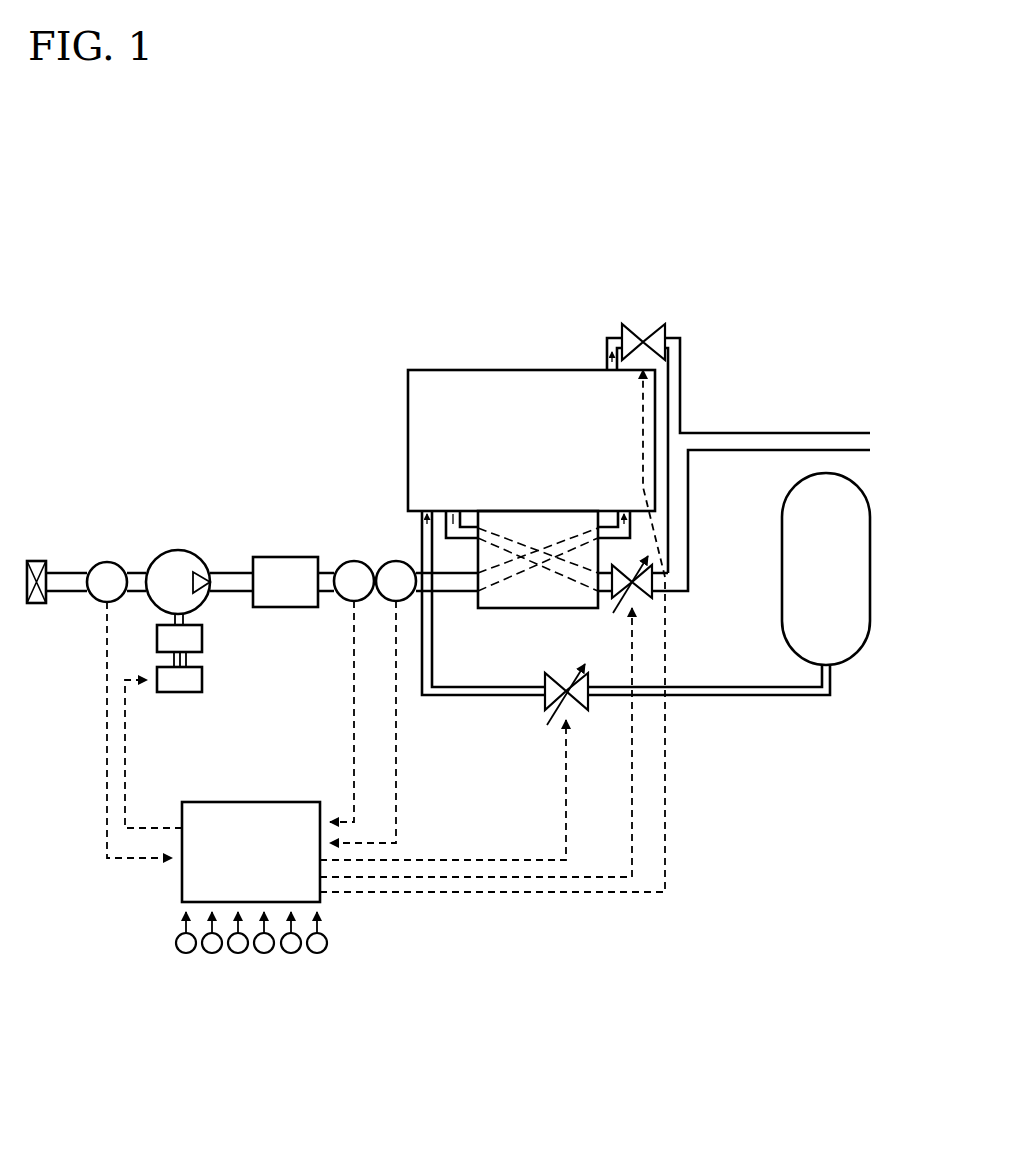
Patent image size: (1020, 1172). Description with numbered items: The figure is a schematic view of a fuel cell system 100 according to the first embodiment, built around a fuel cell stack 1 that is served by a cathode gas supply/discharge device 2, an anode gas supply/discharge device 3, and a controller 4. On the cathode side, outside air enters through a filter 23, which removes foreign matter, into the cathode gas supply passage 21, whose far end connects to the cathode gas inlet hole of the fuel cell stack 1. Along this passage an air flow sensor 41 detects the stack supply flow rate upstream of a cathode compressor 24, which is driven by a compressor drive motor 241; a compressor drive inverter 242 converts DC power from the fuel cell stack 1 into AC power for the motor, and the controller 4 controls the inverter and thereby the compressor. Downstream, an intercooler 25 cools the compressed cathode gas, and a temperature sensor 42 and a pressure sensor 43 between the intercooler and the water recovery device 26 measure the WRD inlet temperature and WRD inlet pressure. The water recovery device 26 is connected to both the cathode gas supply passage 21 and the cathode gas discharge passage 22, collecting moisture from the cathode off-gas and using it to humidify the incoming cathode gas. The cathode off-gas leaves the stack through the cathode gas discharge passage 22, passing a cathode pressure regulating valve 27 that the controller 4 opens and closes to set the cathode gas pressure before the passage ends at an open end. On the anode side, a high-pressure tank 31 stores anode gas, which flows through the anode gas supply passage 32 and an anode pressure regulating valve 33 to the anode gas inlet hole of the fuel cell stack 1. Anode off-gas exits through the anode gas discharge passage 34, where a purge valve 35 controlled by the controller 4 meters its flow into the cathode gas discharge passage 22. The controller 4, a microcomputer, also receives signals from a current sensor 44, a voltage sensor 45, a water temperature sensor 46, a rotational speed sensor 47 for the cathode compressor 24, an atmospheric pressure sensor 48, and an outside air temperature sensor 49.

The fuel cell system 100 is at (193, 306).
The fuel cell stack 1 is at (457, 368).
The cathode gas supply/discharge device 2 is at (183, 500).
The anode gas supply/discharge device 3 is at (690, 712).
The controller 4 is at (262, 802).
The cathode gas supply passage 21 is at (70, 593).
The cathode gas discharge passage 22 is at (690, 488).
The filter 23 is at (37, 605).
The cathode compressor 24 is at (193, 553).
The intercooler 25 is at (282, 557).
The water recovery device 26 is at (530, 608).
The cathode pressure regulating valve 27 is at (652, 600).
The high-pressure tank 31 is at (782, 574).
The anode gas supply passage 32 is at (794, 698).
The anode pressure regulating valve 33 is at (545, 700).
The anode gas discharge passage 34 is at (682, 350).
The purge valve 35 is at (648, 322).
The air flow sensor 41 is at (107, 561).
The temperature sensor 42 is at (354, 561).
The pressure sensor 43 is at (396, 561).
The current sensor 44 is at (186, 953).
The voltage sensor 45 is at (212, 953).
The water temperature sensor 46 is at (238, 953).
The rotational speed sensor 47 is at (264, 953).
The atmospheric pressure sensor 48 is at (291, 953).
The outside air temperature sensor 49 is at (317, 953).
The compressor drive motor 241 is at (202, 638).
The compressor drive inverter 242 is at (202, 680).